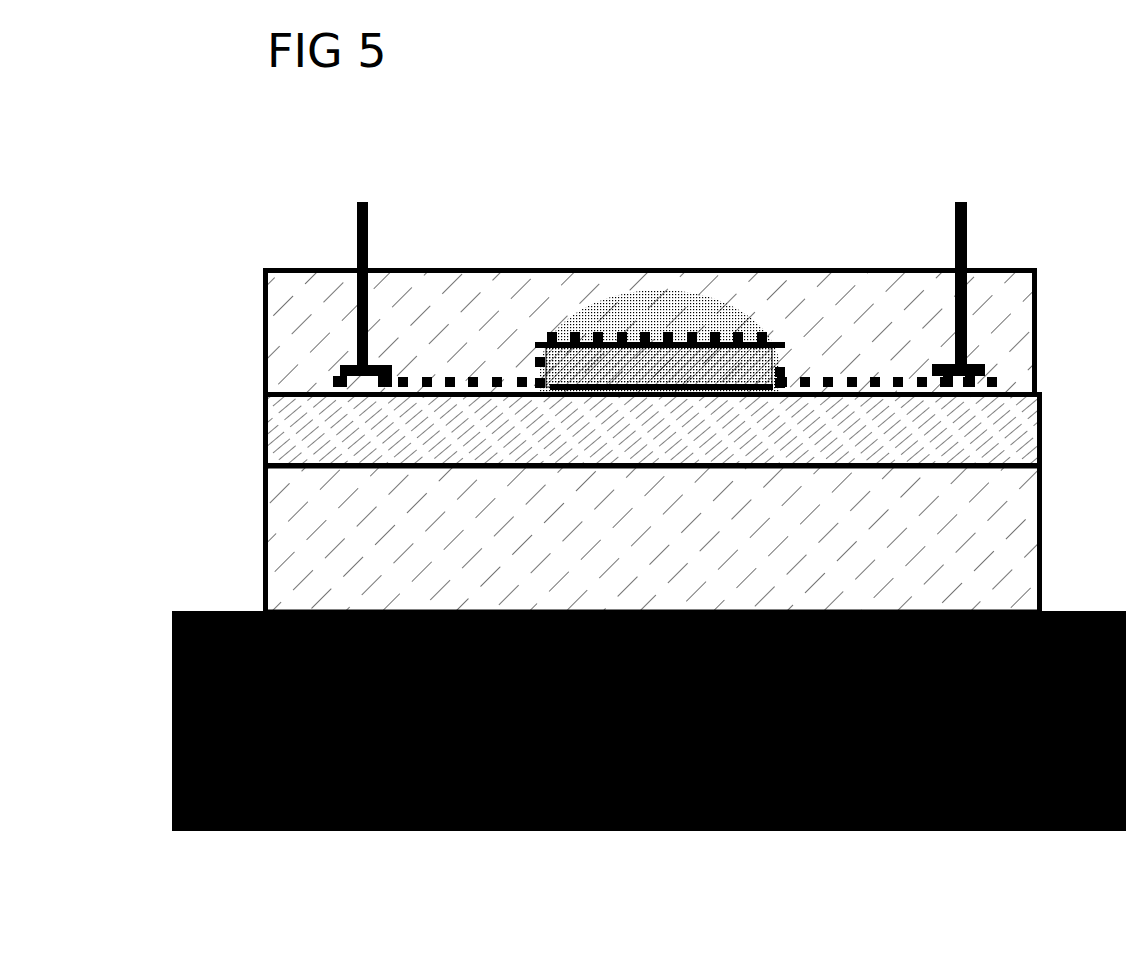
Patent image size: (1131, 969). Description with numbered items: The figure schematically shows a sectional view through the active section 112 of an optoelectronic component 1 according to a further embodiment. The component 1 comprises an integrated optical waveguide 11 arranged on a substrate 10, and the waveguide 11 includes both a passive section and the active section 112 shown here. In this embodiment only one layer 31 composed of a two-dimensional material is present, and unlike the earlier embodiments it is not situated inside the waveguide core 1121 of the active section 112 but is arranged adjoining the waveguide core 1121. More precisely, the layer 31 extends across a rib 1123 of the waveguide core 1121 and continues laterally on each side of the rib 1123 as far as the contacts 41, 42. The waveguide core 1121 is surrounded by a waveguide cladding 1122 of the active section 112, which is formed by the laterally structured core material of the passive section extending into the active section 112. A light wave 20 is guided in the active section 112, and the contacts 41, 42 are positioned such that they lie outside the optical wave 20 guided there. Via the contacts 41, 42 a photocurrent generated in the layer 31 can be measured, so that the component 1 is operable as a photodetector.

The optoelectronic component 1 is at (1060, 198).
The substrate 10 is at (665, 827).
The optical waveguide 11 is at (851, 234).
The active section 112 is at (656, 234).
The waveguide core 1121 is at (1020, 438).
The waveguide cladding 1122 is at (1020, 338).
The rib 1123 is at (592, 365).
The light wave 20 is at (693, 308).
The layer 31 is at (742, 332).
The contact 41 is at (366, 202).
The contact 42 is at (968, 210).